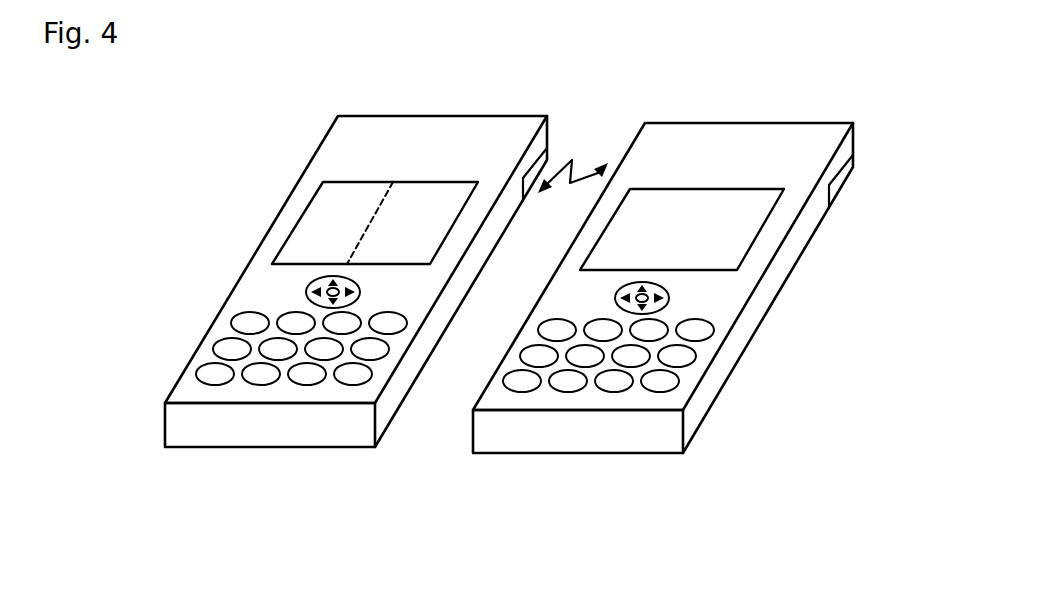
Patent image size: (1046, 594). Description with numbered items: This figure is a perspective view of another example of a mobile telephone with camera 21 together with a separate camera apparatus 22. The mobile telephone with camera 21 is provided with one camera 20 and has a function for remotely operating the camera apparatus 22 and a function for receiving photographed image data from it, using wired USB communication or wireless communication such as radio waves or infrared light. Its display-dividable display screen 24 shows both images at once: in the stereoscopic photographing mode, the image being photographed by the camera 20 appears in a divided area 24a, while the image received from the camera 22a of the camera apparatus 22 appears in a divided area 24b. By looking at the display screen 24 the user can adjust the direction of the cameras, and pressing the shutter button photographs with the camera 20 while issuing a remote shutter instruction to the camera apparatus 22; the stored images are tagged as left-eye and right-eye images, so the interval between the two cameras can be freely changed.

The camera 20 is at (528, 187).
The mobile telephone with camera 21 is at (358, 261).
The camera apparatus 22 is at (676, 266).
The camera 22a is at (843, 184).
The display screen 24 is at (330, 223).
The divided area 24a is at (288, 246).
The divided area 24b is at (368, 224).